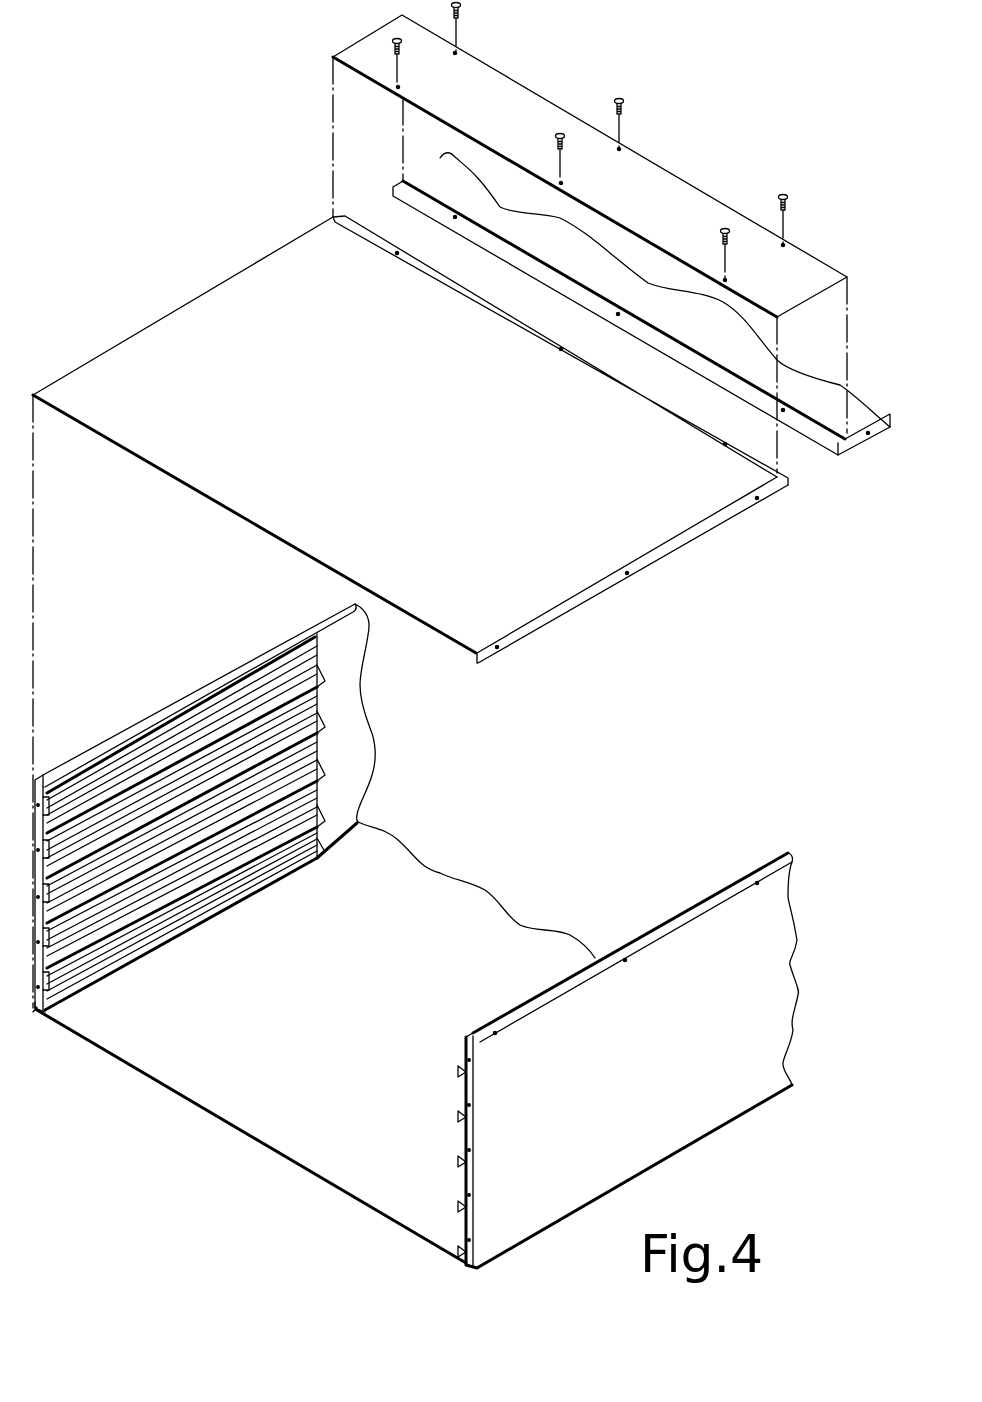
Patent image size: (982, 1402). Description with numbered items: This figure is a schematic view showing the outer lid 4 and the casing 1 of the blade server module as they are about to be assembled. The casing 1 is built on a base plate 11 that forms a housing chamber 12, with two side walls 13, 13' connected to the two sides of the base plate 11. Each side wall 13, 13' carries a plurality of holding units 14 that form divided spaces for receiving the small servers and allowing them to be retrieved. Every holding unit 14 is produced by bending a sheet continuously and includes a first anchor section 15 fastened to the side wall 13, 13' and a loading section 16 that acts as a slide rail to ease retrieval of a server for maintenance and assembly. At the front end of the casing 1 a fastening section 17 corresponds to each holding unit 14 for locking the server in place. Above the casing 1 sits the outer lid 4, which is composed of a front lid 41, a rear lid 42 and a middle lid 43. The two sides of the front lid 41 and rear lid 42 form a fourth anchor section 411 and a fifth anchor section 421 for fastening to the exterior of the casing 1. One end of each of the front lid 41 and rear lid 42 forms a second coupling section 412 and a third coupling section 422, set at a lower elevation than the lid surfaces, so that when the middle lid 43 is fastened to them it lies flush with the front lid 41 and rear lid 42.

The casing 1 is at (247, 1167).
The base plate 11 is at (188, 1100).
The housing chamber 12 is at (392, 1066).
The side wall 13 is at (194, 703).
The side wall 13' is at (628, 1060).
The holding unit 14 is at (330, 658).
The first anchor section 15 is at (55, 798).
The loading section 16 is at (173, 762).
The fastening section 17 is at (38, 1011).
The outer lid 4 is at (261, 180).
The front lid 41 is at (410, 452).
The fourth anchor section 411 is at (567, 610).
The second coupling section 412 is at (748, 457).
The rear lid 42 is at (620, 326).
The fifth anchor section 421 is at (888, 407).
The third coupling section 422 is at (820, 433).
The middle lid 43 is at (713, 212).